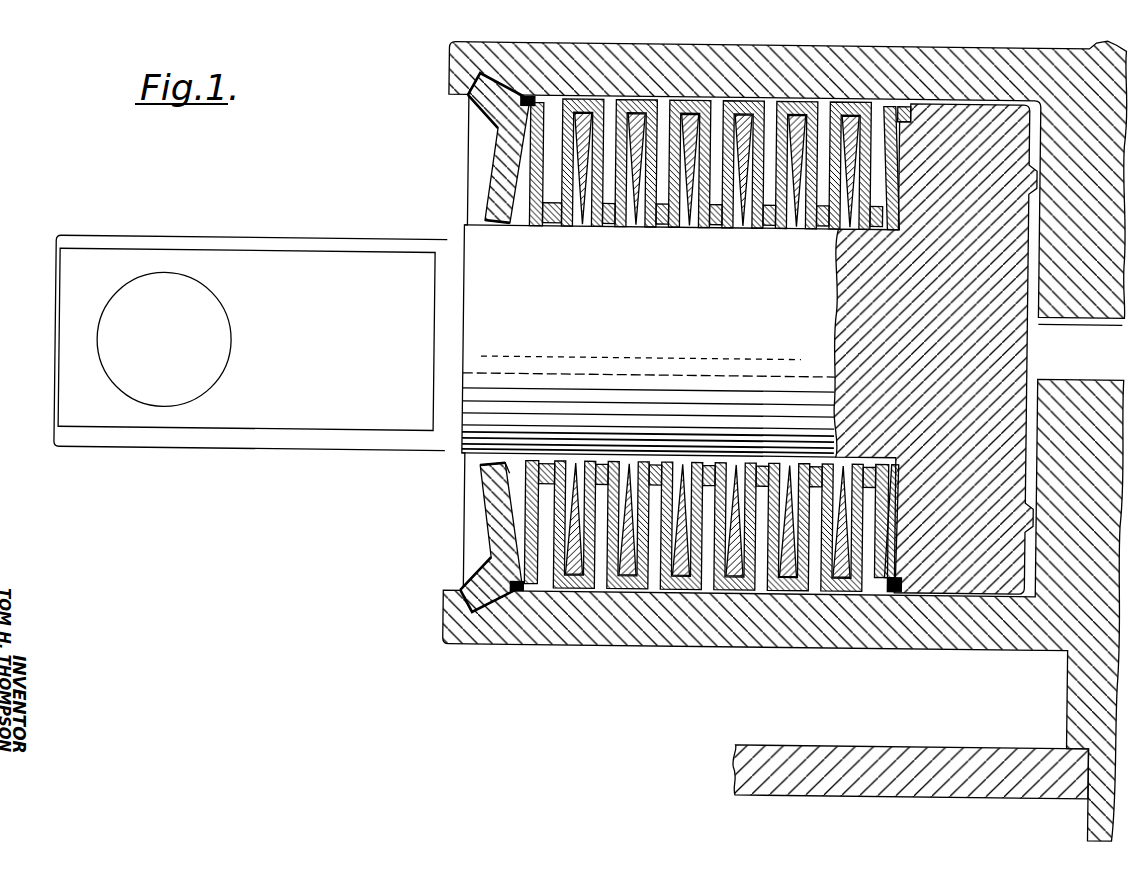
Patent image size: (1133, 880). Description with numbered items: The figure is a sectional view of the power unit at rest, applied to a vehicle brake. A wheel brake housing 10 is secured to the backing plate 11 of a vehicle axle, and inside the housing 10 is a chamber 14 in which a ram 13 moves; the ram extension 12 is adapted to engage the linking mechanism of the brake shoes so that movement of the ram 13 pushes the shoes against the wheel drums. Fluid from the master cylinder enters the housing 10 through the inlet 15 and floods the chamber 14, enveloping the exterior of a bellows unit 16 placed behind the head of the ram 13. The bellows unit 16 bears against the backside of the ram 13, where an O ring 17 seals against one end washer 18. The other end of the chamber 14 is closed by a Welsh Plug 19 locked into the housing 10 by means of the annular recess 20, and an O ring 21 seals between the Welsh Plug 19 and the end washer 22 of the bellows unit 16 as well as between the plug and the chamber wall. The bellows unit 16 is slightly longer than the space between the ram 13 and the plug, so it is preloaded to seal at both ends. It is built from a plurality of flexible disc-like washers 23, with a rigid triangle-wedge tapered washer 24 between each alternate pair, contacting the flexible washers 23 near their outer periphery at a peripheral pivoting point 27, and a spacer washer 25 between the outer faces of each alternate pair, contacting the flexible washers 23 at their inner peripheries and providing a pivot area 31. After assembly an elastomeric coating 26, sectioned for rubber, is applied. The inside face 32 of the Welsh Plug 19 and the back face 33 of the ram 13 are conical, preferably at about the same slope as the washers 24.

The wheel brake housing 10 is at (674, 632).
The backing plate 11 is at (745, 768).
The ram extension 12 is at (125, 442).
The ram 13 is at (921, 309).
The chamber 14 is at (763, 103).
The inlet 15 is at (1066, 352).
The bellows unit 16 is at (505, 520).
The O ring 17 is at (895, 590).
The end washer 18 is at (882, 520).
The Welsh Plug 19 is at (500, 159).
The annular recess 20 is at (489, 614).
The O ring 21 is at (513, 109).
The end washer 22 is at (531, 181).
The flexible disc-like washer 23 is at (674, 102).
The tapered washer 24 is at (838, 589).
The spacer washer 25 is at (551, 223).
The elastomeric coating 26 is at (598, 99).
The peripheral pivoting point 27 is at (658, 575).
The pivot area 31 is at (614, 477).
The inside face 32 is at (512, 478).
The back face 33 is at (890, 190).